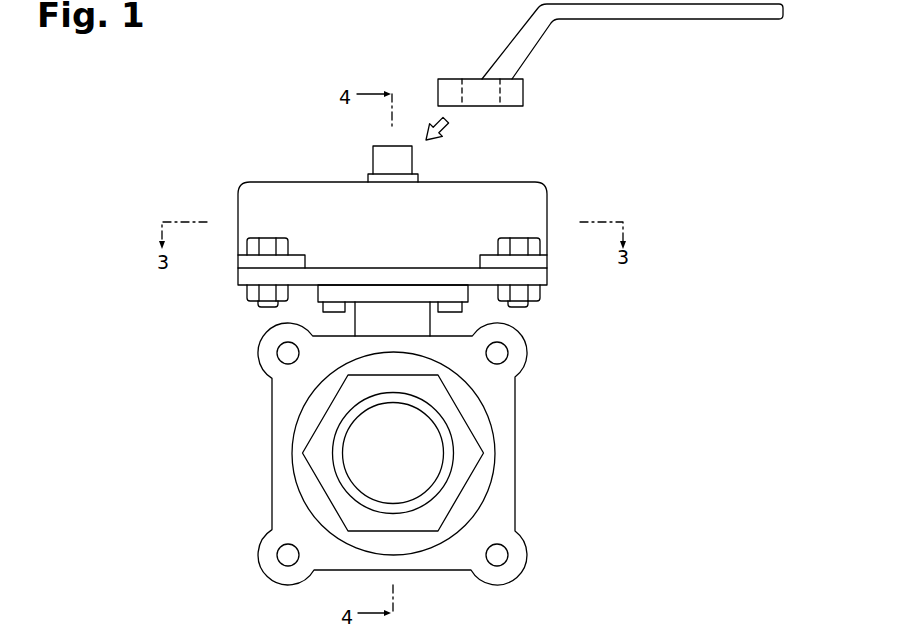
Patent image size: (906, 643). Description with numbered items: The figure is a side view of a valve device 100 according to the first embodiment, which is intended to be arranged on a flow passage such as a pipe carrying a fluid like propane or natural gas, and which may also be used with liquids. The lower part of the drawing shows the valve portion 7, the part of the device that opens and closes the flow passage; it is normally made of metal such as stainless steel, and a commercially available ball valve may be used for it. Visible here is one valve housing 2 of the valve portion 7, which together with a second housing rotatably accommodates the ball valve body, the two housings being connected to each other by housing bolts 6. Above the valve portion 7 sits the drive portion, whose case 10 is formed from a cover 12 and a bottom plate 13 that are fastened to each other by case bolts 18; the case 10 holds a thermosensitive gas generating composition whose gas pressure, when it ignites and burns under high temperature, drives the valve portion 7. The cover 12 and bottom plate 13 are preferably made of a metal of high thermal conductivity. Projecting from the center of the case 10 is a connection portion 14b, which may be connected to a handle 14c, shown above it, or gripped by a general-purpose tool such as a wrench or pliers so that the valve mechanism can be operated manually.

The valve device 100 is at (634, 165).
The valve housing 2 is at (507, 428).
The housing bolts 6 is at (507, 353).
The valve portion 7 is at (432, 468).
The case 10 is at (612, 275).
The cover 12 is at (542, 242).
The bottom plate 13 is at (542, 277).
The connection portion 14b is at (382, 152).
The handle 14c is at (695, 15).
The case bolts 18 is at (268, 243).